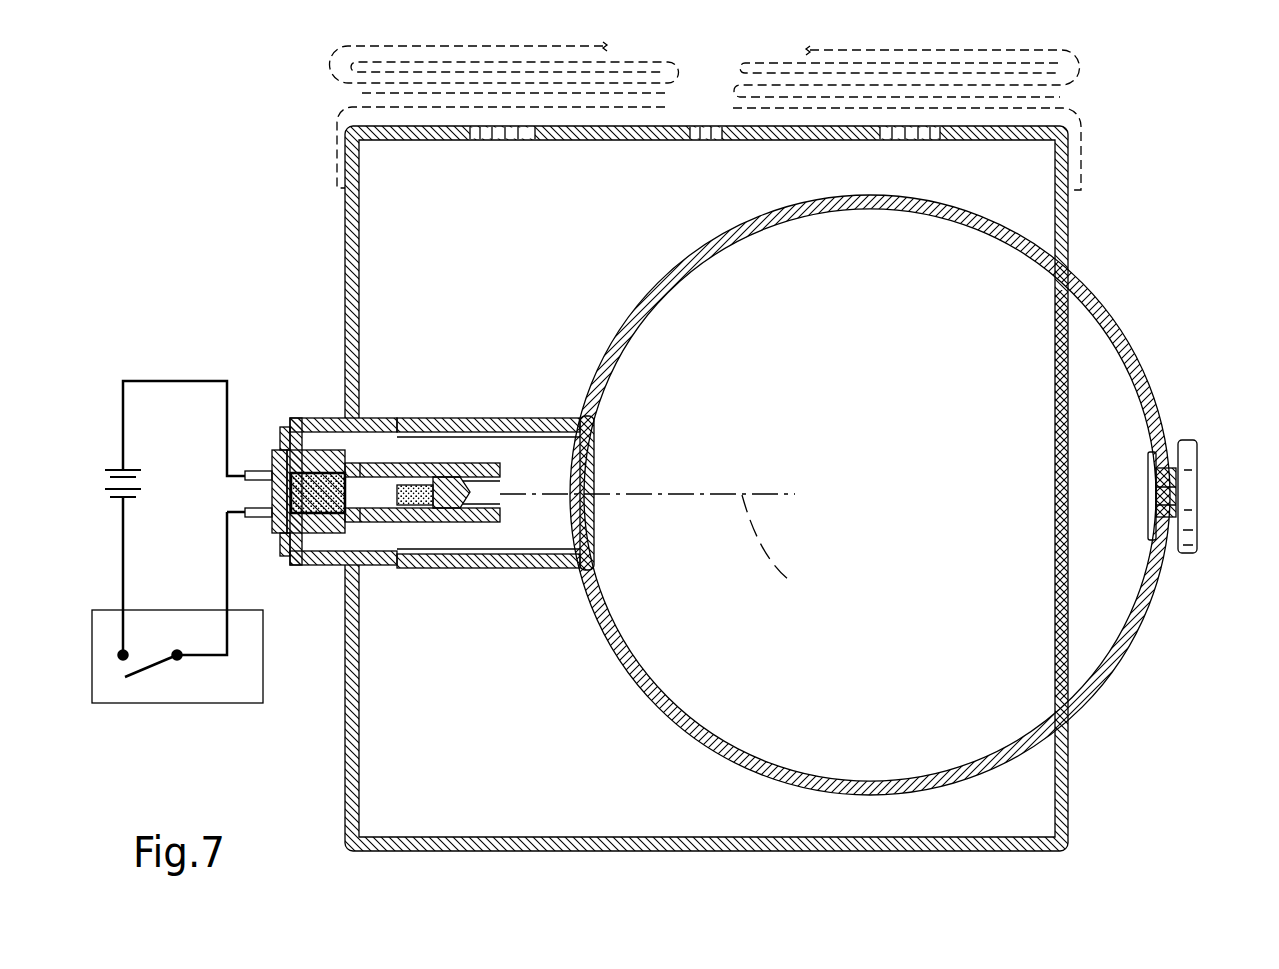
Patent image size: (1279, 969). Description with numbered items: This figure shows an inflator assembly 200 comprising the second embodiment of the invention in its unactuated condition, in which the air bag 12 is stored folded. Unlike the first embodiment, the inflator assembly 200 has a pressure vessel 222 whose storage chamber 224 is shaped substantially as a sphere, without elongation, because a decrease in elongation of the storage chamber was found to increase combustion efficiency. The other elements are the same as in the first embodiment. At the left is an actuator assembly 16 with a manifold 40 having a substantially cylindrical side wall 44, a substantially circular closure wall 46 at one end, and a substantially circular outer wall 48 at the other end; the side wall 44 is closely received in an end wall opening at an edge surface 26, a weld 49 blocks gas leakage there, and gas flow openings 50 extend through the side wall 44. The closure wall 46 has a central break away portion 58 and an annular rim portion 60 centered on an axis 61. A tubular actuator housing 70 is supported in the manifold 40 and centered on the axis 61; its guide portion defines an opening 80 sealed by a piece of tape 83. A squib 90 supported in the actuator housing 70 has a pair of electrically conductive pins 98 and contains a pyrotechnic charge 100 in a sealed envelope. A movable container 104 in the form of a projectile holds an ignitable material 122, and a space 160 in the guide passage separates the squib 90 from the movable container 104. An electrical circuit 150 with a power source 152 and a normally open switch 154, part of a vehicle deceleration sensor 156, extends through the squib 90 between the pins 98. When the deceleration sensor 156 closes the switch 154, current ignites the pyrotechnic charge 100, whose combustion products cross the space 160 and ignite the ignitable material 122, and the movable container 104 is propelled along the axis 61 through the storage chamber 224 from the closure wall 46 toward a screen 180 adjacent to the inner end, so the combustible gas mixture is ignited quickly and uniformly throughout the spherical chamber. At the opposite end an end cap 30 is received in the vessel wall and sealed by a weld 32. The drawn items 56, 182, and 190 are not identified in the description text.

The air bag 12 is at (338, 68).
The actuator assembly 16 is at (254, 379).
The edge surface 26 is at (594, 418).
The end cap 30 is at (1193, 437).
The weld 32 is at (1170, 525).
The manifold 40 is at (313, 416).
The side wall 44 is at (507, 418).
The closure wall 46 is at (598, 434).
The outer wall 48 is at (291, 447).
The weld 49 is at (531, 689).
The gas flow openings 50 is at (418, 384).
The outlet opening 56 is at (620, 478).
The break away portion 58 is at (588, 507).
The rim portion 60 is at (592, 553).
The axis 61 is at (660, 549).
The actuator housing 70 is at (346, 443).
The opening 80 is at (497, 488).
The tape 83 is at (500, 503).
The squib 90 is at (277, 536).
The electrically conductive pins 98 is at (245, 512).
The pyrotechnic charge 100 is at (318, 514).
The movable container 104 is at (450, 506).
The ignitable material 122 is at (415, 504).
The electrical circuit 150 is at (155, 547).
The power source 152 is at (108, 473).
The switch 154 is at (152, 668).
The vehicle deceleration sensor 156 is at (150, 704).
The space 160 is at (385, 470).
The screen 180 is at (344, 241).
The vent apertures 182 is at (918, 133).
The wall liner 190 is at (1056, 375).
The inflator assembly 200 is at (214, 264).
The pressure vessel 222 is at (530, 289).
The storage chamber 224 is at (1106, 391).